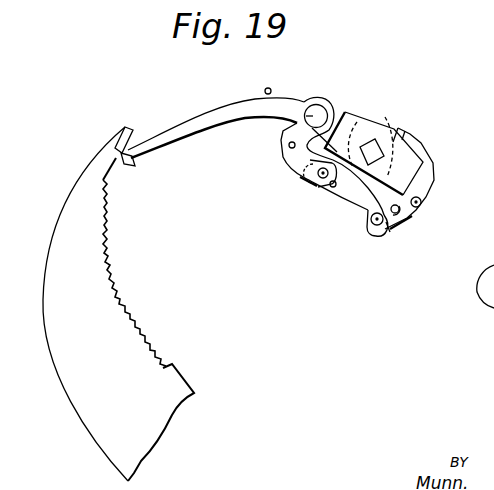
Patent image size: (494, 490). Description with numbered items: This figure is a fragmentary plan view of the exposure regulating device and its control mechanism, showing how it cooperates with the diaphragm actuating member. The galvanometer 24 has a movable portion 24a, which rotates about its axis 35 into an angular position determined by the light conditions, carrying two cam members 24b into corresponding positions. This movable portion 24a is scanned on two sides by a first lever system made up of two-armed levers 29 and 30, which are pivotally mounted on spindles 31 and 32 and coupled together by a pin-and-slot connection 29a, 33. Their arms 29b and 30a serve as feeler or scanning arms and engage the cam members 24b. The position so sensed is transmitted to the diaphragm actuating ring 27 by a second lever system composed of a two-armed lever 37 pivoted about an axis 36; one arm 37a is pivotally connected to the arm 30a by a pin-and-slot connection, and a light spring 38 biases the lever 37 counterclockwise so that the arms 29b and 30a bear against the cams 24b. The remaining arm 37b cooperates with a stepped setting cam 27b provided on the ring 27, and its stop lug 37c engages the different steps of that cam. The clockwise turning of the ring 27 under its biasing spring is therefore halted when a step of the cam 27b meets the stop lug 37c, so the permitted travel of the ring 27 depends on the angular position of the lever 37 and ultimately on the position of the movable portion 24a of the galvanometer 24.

The galvanometer 24 is at (418, 112).
The movable portion of the galvanometer 24a is at (356, 206).
The cam members 24b is at (360, 252).
The diaphragm actuating ring 27 is at (100, 398).
The stepped setting cam 27b is at (110, 278).
The two-armed lever 29 is at (424, 208).
The pin of the pin-and-slot connection 29a is at (399, 218).
The feeler arm 29b is at (418, 151).
The two-armed lever 30 is at (345, 191).
The feeler arm 30a is at (340, 194).
The spindle 31 is at (419, 200).
The spindle 32 is at (376, 227).
The slot of the pin-and-slot connection 33 is at (389, 230).
The axis of the movable galvanometer system 35 is at (306, 248).
The axis of the two-armed lever 36 is at (288, 124).
The two-armed lever 37 is at (325, 104).
The arm of the lever 37a is at (292, 164).
The arm of the lever 37b is at (191, 124).
The stop lug 37c is at (135, 162).
The light spring 38 is at (288, 97).